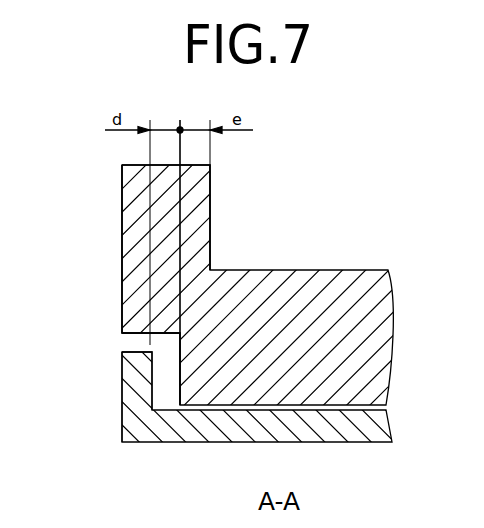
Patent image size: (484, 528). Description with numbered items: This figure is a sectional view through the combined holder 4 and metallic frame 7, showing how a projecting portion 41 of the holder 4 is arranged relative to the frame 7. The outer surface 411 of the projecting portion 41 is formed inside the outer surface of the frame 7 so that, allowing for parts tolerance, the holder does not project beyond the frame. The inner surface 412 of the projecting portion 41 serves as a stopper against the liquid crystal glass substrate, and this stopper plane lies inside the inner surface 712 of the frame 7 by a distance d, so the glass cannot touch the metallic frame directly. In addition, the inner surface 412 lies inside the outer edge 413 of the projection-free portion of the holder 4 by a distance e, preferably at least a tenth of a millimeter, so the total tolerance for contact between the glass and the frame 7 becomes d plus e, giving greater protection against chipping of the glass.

The holder 4 is at (347, 280).
The projecting portion 41 is at (130, 184).
The outer surface of projecting portion 411 is at (121, 248).
The inner surface of projecting portion 412 is at (213, 181).
The outer edge of projection-free portion of holder 413 is at (180, 357).
The frame 7 is at (366, 425).
The inner surface of frame 712 is at (152, 382).